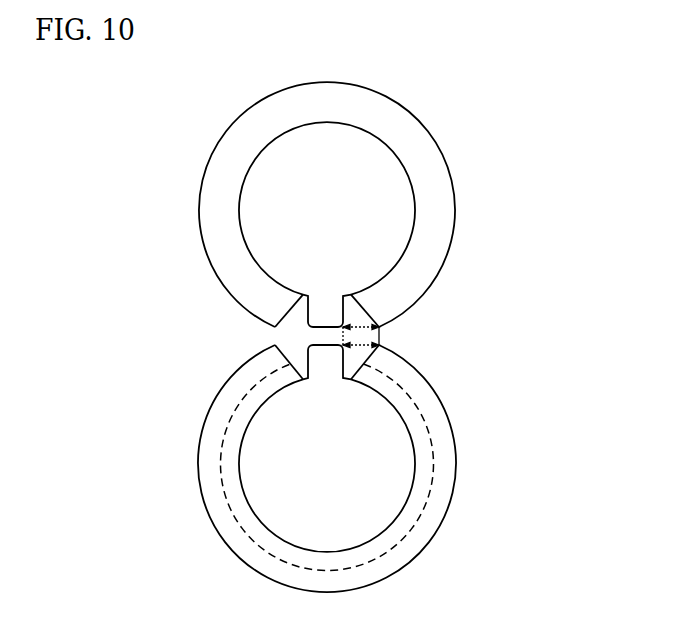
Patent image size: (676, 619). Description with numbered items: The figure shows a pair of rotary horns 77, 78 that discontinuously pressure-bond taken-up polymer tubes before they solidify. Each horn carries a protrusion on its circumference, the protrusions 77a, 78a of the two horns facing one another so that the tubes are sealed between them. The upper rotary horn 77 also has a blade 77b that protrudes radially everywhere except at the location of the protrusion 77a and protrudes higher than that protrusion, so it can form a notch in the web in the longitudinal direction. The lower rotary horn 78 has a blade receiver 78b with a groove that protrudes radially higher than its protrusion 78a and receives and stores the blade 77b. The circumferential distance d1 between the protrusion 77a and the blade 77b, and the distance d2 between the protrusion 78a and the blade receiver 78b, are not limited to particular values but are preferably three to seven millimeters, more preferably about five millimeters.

The rotary horn 77 is at (344, 204).
The protrusion 77a is at (327, 303).
The blade 77b is at (435, 186).
The rotary horn 78 is at (346, 468).
The protrusion 78a is at (327, 363).
The blade receiver 78b is at (443, 500).
The distance between protrusion and blade d1 is at (379, 327).
The distance between protrusion and blade receiver d2 is at (377, 360).